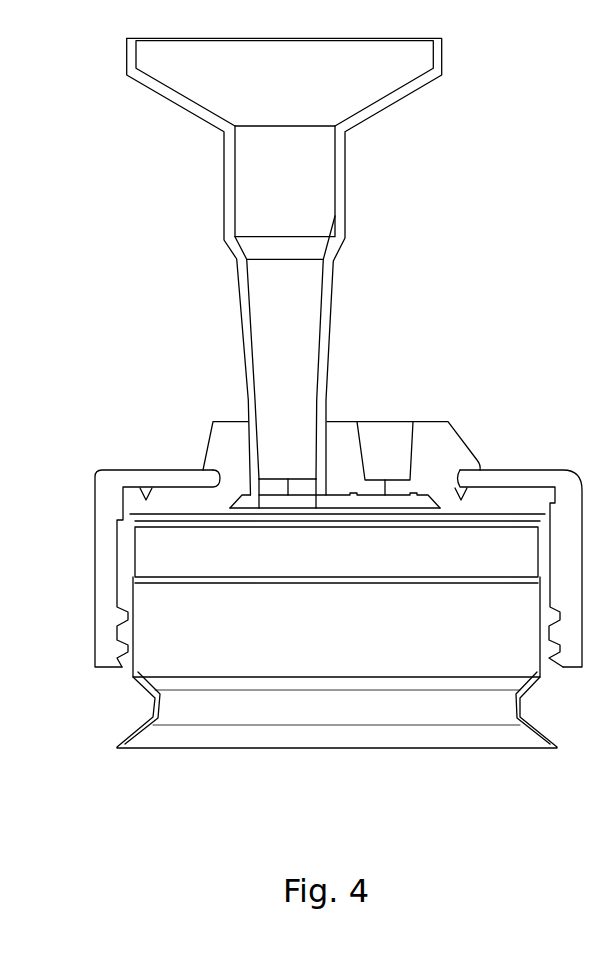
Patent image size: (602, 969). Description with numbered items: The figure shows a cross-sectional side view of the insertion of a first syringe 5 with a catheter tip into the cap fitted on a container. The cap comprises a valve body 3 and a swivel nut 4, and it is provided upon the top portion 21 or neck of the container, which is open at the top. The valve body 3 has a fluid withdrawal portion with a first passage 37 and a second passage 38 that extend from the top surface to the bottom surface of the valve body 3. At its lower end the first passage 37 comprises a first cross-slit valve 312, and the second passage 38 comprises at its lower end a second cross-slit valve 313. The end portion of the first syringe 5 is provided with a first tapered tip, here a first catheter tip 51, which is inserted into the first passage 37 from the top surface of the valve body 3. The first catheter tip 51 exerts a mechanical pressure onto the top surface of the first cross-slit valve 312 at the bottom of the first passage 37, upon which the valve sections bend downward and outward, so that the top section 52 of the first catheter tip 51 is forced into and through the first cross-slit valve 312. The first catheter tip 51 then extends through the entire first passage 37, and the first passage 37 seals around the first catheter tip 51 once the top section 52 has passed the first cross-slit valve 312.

The first syringe 5 is at (290, 197).
The first catheter tip 51 is at (278, 310).
The top section of the first catheter tip 52 is at (295, 505).
The valve body 3 is at (440, 455).
The second passage 38 is at (384, 443).
The second cross-slit valve 313 is at (393, 491).
The first passage 37 is at (290, 467).
The first cross-slit valve 312 is at (280, 503).
The swivel nut 4 is at (108, 493).
The top portion 21 is at (343, 657).